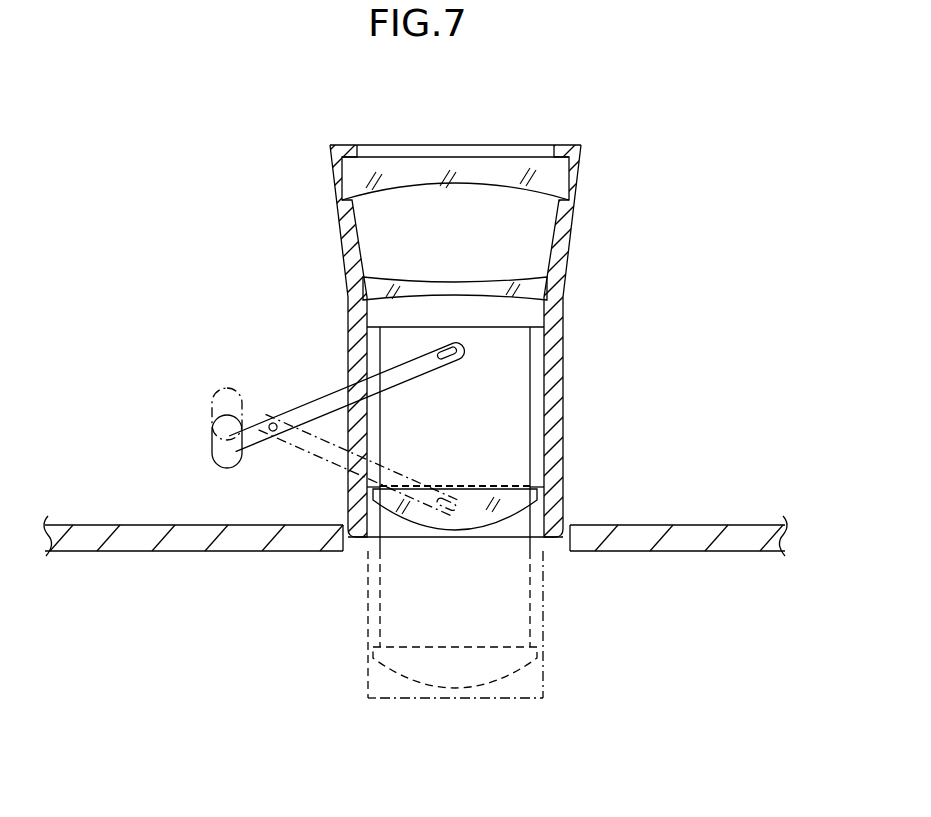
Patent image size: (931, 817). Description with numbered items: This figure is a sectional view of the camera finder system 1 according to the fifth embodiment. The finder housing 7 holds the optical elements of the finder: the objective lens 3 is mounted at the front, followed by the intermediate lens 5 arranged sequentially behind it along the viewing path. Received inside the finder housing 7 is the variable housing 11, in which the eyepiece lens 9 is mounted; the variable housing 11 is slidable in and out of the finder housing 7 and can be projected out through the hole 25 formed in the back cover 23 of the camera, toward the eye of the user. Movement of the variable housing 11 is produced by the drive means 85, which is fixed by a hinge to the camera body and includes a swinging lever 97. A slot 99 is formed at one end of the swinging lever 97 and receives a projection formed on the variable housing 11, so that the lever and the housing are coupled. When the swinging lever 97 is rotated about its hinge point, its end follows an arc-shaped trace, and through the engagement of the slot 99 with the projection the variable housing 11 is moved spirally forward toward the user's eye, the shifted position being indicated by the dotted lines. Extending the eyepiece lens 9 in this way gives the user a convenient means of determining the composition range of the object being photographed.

The optical scanning unit / lens assembly 1 is at (628, 237).
The objective lens 3 is at (428, 172).
The intermediate lens 5 is at (537, 290).
The finder housing 7 is at (340, 222).
The eyepiece lens 9 is at (520, 498).
The variable housing 11 is at (537, 422).
The back cover 23 is at (135, 533).
The hole 25 is at (490, 545).
The drive means 85 is at (302, 401).
The swinging lever 97 is at (218, 453).
The slot 99 is at (435, 347).